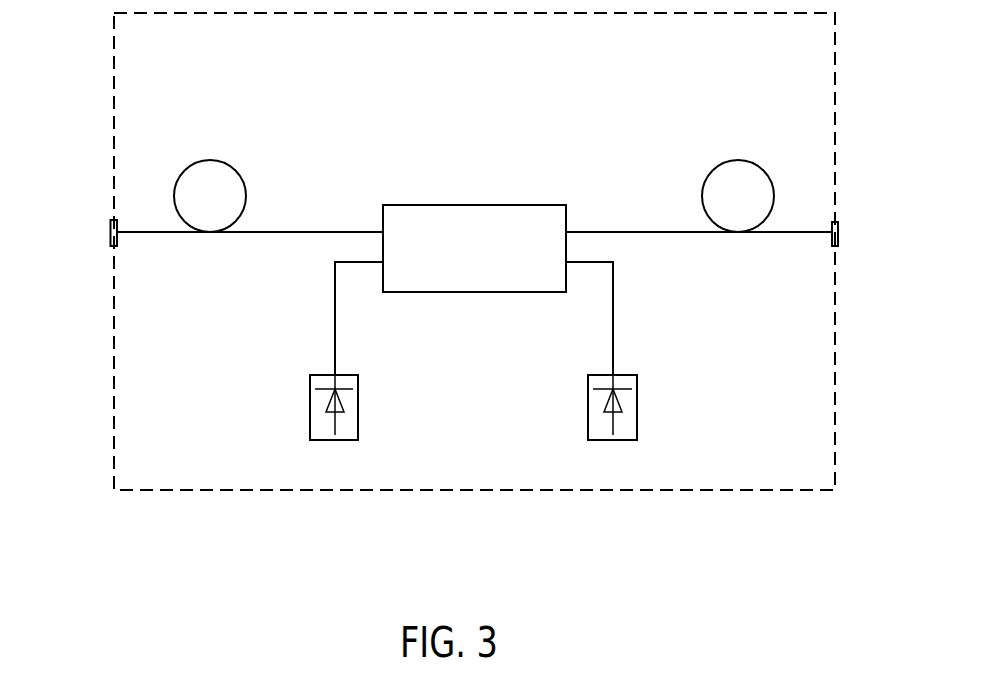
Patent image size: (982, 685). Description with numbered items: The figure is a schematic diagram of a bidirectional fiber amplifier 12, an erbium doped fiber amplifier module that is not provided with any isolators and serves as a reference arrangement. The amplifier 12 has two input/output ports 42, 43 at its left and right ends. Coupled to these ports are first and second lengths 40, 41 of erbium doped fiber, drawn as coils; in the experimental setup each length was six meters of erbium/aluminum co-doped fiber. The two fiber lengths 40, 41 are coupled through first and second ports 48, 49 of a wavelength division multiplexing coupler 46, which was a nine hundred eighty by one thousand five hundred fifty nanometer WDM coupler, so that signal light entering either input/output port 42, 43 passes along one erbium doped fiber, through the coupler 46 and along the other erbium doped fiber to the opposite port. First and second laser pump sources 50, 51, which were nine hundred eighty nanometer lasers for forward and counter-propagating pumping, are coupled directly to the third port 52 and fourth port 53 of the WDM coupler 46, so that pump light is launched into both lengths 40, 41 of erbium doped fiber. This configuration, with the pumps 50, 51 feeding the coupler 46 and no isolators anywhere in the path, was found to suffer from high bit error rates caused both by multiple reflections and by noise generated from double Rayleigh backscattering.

The bidirectional fiber amplifier 12 is at (157, 52).
The first length of erbium doped fiber 40 is at (238, 171).
The second length of erbium doped fiber 41 is at (708, 172).
The input/output port 42 is at (109, 233).
The input/output port 43 is at (838, 233).
The wavelength division multiplexing coupler 46 is at (489, 276).
The first port of the WDM coupler 48 is at (327, 231).
The second port of the WDM coupler 49 is at (580, 231).
The first laser pump source 50 is at (310, 390).
The second laser pump source 51 is at (637, 390).
The third port of the WDM coupler 52 is at (340, 264).
The fourth port of the WDM coupler 53 is at (598, 264).